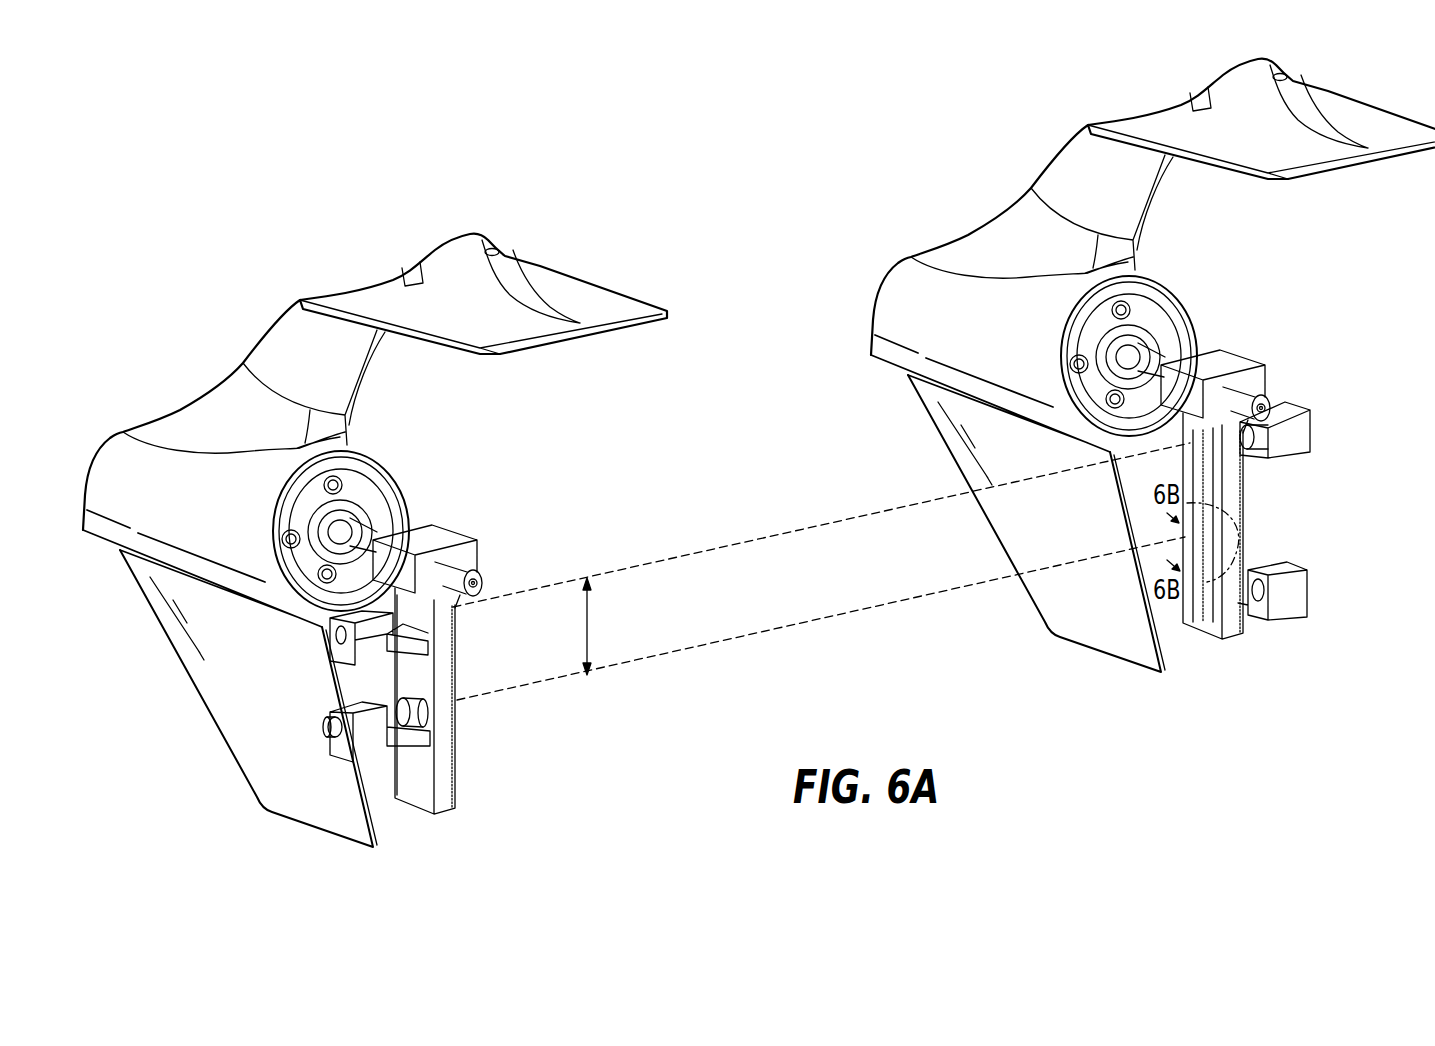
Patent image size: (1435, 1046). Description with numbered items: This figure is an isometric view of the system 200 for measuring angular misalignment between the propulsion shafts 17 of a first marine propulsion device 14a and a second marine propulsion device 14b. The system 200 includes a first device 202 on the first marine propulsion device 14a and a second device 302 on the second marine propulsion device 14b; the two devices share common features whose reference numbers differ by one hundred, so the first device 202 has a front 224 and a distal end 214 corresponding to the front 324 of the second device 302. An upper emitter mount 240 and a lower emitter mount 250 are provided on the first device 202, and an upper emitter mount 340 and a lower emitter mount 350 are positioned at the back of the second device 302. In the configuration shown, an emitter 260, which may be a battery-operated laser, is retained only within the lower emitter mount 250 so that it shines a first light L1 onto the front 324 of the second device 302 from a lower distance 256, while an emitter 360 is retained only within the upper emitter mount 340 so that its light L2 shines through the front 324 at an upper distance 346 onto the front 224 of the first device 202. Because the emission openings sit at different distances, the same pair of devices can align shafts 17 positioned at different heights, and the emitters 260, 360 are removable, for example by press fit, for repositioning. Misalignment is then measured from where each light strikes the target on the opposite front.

The system 200 is at (646, 165).
The first marine propulsion device 14a is at (186, 352).
The second marine propulsion device 14b is at (980, 195).
The first device 202 is at (452, 482).
The second device 302 is at (1232, 310).
The propulsion shaft 17 is at (455, 570).
The mounting bar 214 is at (435, 830).
The front 224 is at (478, 797).
The upper emitter mount 240 is at (340, 650).
The lower emitter mount 250 is at (340, 745).
The emitter 260 is at (380, 690).
The lower distance 256 is at (590, 624).
The first light L1 is at (742, 632).
The second line L2 is at (728, 540).
The upper distance 346 is at (905, 498).
The front 324 is at (1197, 614).
The upper emitter mount 340 is at (1298, 442).
The lower emitter mount 350 is at (1282, 607).
The emitter 360 is at (1270, 420).